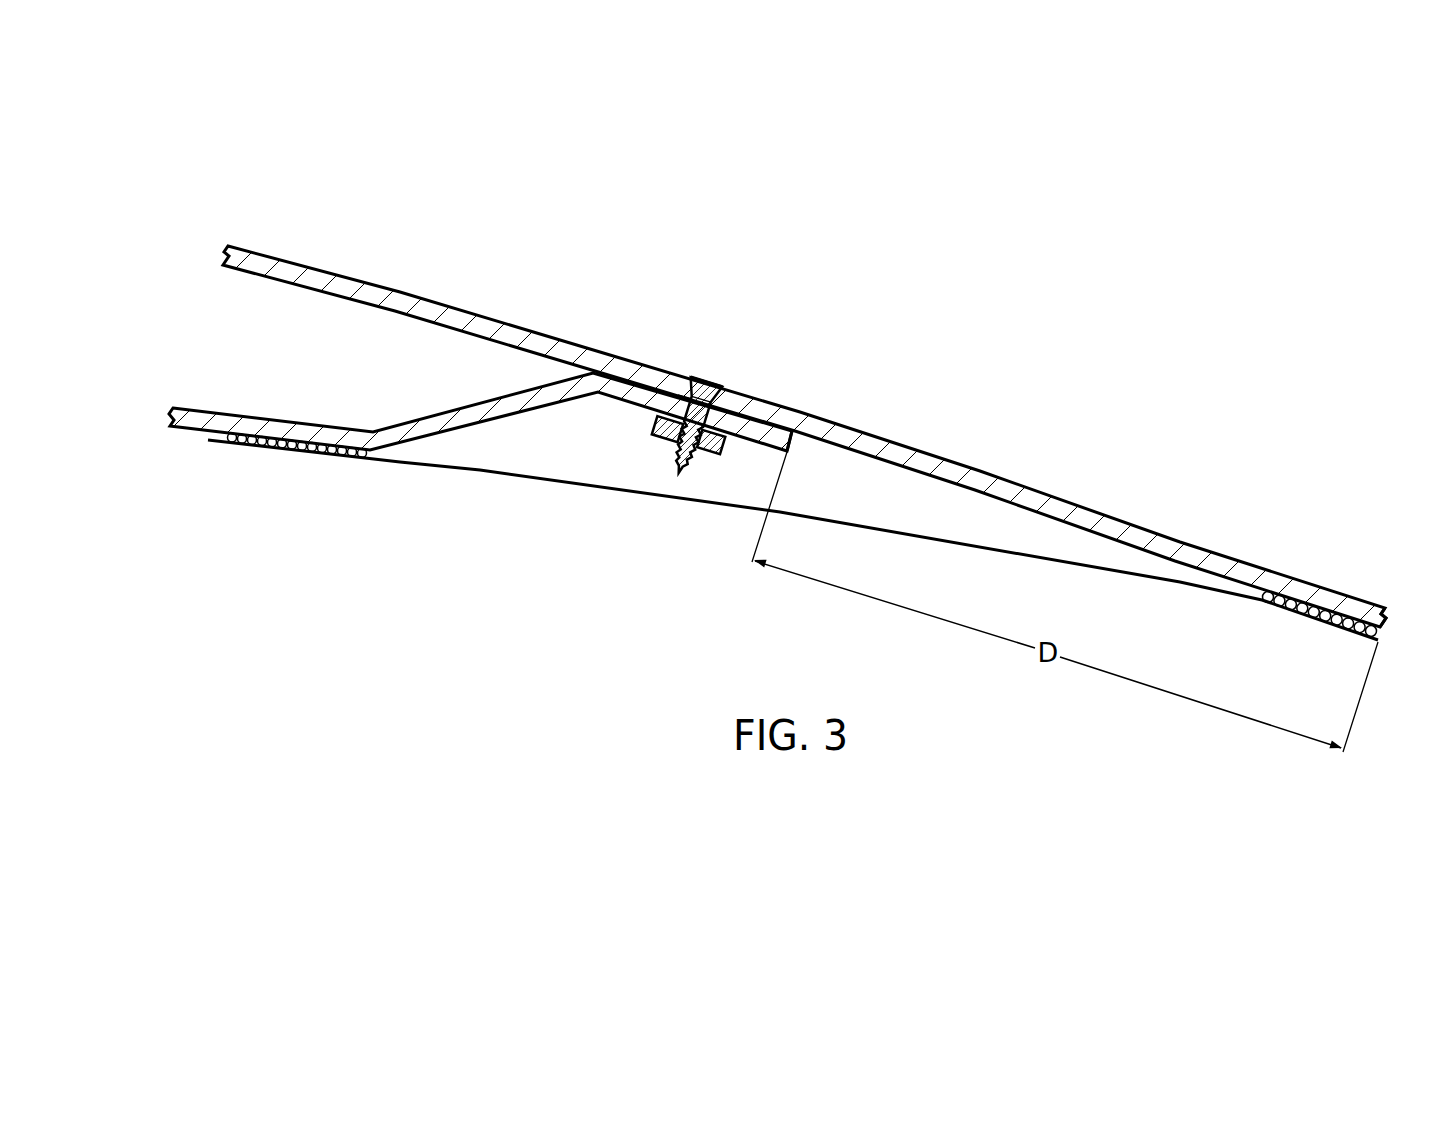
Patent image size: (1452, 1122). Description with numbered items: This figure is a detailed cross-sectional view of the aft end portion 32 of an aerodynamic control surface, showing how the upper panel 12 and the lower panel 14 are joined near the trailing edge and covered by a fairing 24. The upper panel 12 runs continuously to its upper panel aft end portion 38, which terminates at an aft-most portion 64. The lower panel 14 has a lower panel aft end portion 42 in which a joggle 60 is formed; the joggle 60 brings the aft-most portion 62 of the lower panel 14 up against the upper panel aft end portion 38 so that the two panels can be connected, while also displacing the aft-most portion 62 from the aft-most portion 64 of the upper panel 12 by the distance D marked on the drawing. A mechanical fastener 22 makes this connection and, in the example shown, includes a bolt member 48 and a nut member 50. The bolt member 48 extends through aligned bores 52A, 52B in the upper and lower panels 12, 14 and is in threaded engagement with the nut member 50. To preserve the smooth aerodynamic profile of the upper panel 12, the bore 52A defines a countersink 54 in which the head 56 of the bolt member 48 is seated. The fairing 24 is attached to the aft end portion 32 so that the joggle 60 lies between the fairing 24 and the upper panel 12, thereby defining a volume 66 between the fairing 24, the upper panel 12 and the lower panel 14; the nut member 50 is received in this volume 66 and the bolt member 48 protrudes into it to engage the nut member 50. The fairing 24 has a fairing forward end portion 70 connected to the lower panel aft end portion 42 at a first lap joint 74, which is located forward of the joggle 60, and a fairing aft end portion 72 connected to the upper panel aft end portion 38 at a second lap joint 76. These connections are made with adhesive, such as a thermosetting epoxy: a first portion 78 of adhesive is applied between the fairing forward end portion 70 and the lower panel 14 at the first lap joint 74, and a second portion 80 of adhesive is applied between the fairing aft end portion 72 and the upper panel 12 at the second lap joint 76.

The upper panel 12 is at (254, 253).
The lower panel 14 is at (468, 425).
The mechanical fastener 22 is at (720, 381).
The fairing 24 is at (690, 501).
The aft end portion 32 is at (1195, 335).
The upper panel aft end portion 38 is at (233, 293).
The lower panel aft end portion 42 is at (232, 395).
The bolt member 48 is at (715, 410).
The nut member 50 is at (652, 434).
The bore 52A is at (688, 383).
The bore 52B is at (668, 407).
The countersink 54 is at (688, 378).
The head 56 is at (712, 388).
The joggle 60 is at (446, 413).
The aft-most portion 62 is at (756, 448).
The aft-most portion 64 is at (1352, 598).
The volume 66 is at (582, 461).
The fairing forward end portion 70 is at (249, 456).
The fairing aft end portion 72 is at (1291, 623).
The first lap joint 74 is at (208, 448).
The second lap joint 76 is at (1384, 649).
The first portion of adhesive 78 is at (296, 455).
The second portion of adhesive 80 is at (1262, 606).